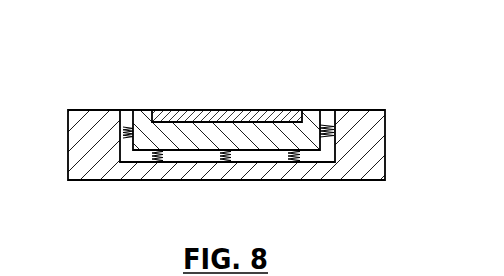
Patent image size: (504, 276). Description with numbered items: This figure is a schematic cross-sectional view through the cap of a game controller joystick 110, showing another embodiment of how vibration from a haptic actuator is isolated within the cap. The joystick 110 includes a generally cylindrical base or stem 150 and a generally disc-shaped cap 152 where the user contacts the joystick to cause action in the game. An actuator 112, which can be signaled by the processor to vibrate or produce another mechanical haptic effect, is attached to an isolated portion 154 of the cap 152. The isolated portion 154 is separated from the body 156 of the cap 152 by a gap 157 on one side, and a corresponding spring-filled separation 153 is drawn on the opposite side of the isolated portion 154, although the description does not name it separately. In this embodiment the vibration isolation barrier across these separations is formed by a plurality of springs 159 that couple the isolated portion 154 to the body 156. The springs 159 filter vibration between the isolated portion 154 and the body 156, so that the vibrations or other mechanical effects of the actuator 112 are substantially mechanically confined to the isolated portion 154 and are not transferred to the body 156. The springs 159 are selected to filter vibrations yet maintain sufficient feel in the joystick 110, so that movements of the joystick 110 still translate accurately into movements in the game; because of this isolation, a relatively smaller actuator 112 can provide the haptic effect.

The joystick 110 is at (70, 90).
The actuator 112 is at (222, 115).
The base or stem 150 is at (60, 263).
The cap or top 152 is at (388, 135).
The spring contact 153 is at (324, 120).
The isolated portion 154 is at (314, 117).
The body 156 is at (362, 163).
The gap 157 is at (127, 110).
The springs 159 is at (157, 162).